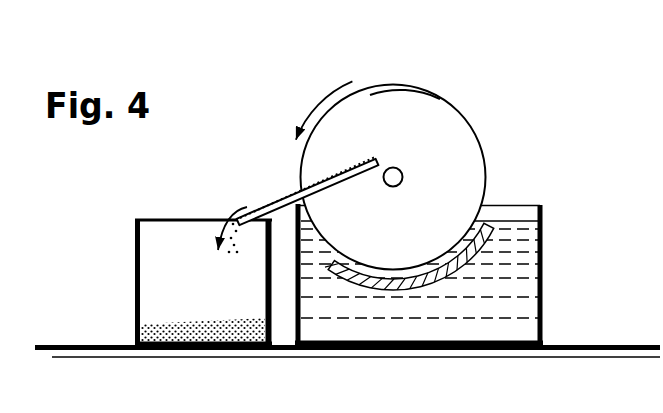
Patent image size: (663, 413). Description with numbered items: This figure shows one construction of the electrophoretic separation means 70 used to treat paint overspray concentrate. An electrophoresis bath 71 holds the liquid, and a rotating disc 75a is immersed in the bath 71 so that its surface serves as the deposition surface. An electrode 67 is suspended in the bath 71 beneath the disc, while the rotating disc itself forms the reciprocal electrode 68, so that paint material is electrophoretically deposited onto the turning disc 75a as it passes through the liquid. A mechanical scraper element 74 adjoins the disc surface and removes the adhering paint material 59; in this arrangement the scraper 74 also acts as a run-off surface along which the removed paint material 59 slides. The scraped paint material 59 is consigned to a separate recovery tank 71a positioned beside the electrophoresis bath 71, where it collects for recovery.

The electrophoretic separation means 70 is at (290, 162).
The electrophoresis bath 71 is at (543, 288).
The recovery tank 71a is at (135, 253).
The mechanical scraper element 74 is at (287, 197).
The rotating disc 75a is at (433, 106).
The reciprocal electrode 68 is at (489, 172).
The electrode 67 is at (358, 300).
The paint material 59 is at (135, 330).